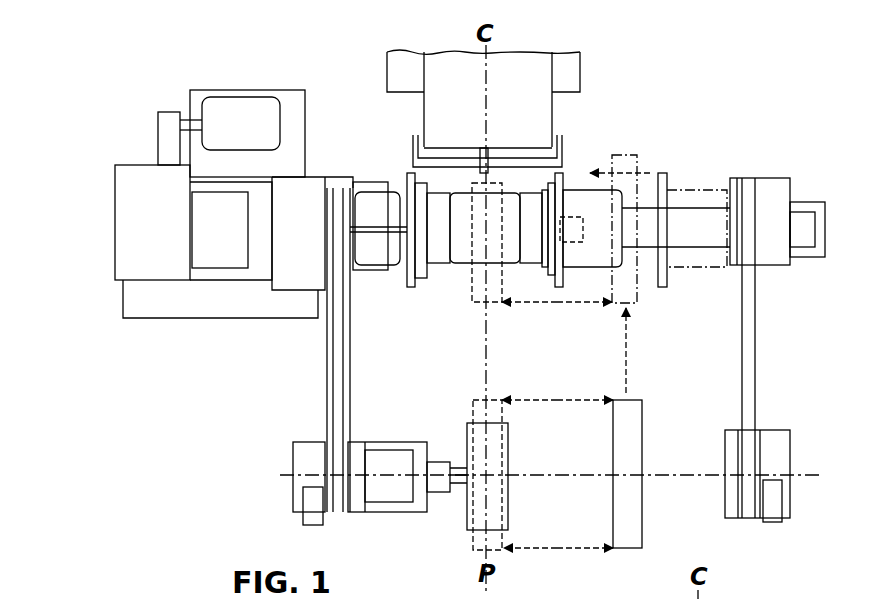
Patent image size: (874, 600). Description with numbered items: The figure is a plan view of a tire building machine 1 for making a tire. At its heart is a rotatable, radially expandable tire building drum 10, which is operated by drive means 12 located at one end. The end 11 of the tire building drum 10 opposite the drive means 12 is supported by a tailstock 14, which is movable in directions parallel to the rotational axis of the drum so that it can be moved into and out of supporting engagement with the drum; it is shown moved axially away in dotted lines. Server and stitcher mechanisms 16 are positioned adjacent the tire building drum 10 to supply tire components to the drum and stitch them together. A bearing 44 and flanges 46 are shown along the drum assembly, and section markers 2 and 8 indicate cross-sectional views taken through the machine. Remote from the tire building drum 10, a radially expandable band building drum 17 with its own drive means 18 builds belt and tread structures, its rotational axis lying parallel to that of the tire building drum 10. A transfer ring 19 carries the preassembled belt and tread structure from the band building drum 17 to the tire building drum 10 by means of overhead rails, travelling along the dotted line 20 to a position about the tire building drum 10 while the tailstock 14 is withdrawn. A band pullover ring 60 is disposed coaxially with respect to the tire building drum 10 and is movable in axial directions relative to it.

The tire building machine 1 is at (767, 280).
The section line 2 is at (385, 198).
The section line 8 is at (448, 442).
The tire building drum 10 is at (412, 157).
The end of the drum 11 is at (575, 242).
The drive means 12 is at (272, 118).
The tailstock 14 is at (767, 187).
The server and stitcher mechanisms 16 is at (540, 118).
The band building drum 17 is at (508, 496).
The drive means 18 is at (398, 458).
The transfer ring 19 is at (493, 305).
The dotted line 20 is at (627, 353).
The bearing 44 is at (425, 255).
The flange 46 is at (560, 180).
The band pullover ring 60 is at (418, 284).